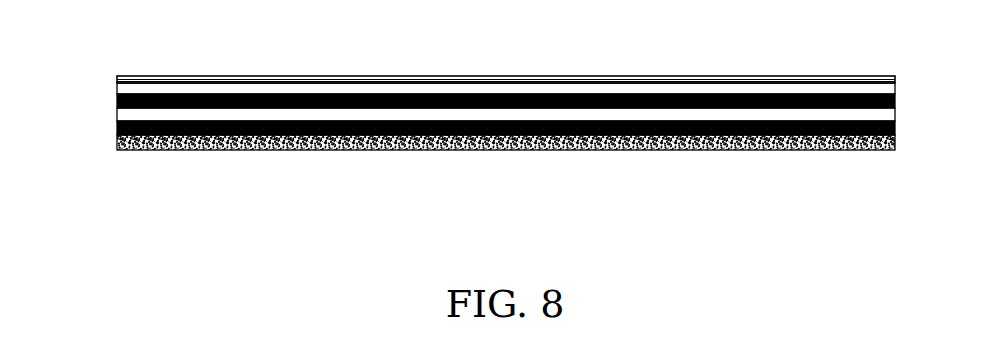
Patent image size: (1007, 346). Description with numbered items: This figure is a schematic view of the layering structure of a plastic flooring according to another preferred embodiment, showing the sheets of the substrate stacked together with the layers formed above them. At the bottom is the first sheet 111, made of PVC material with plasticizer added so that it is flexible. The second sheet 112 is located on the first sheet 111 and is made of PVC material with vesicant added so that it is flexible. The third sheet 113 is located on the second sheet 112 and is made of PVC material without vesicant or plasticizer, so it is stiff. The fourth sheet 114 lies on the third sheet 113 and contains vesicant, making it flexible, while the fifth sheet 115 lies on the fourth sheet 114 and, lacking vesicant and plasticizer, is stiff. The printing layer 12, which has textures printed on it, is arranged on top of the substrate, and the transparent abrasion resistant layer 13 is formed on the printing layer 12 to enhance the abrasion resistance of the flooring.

The printing layer 12 is at (117, 80).
The abrasion resistant layer 13 is at (205, 79).
The fifth sheet 115 is at (885, 90).
The fourth sheet 114 is at (117, 101).
The third sheet 113 is at (120, 117).
The second sheet 112 is at (117, 133).
The first sheet 111 is at (237, 147).